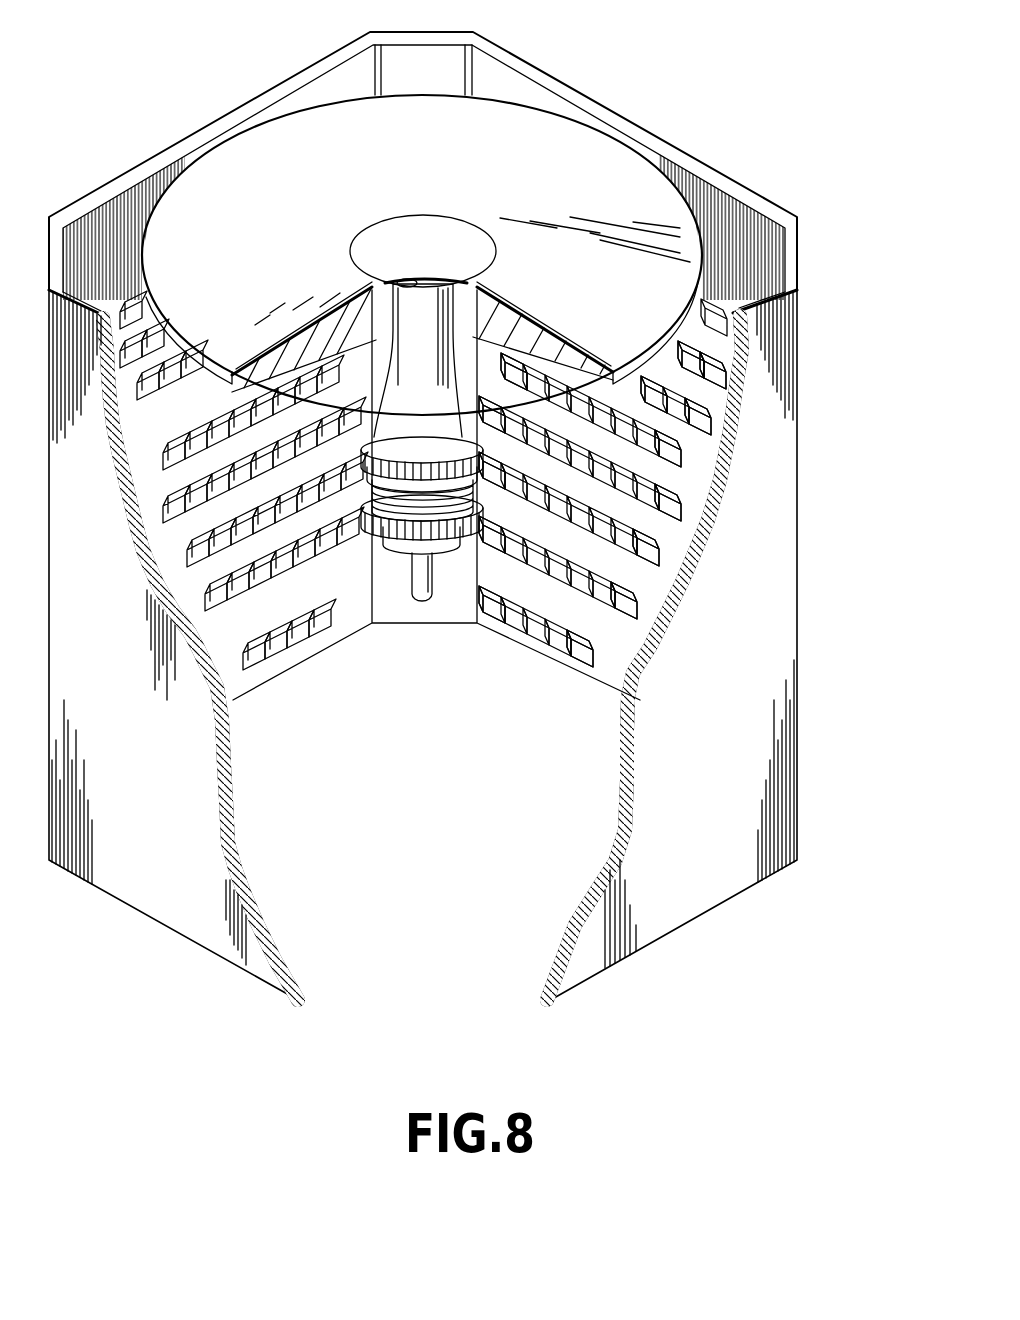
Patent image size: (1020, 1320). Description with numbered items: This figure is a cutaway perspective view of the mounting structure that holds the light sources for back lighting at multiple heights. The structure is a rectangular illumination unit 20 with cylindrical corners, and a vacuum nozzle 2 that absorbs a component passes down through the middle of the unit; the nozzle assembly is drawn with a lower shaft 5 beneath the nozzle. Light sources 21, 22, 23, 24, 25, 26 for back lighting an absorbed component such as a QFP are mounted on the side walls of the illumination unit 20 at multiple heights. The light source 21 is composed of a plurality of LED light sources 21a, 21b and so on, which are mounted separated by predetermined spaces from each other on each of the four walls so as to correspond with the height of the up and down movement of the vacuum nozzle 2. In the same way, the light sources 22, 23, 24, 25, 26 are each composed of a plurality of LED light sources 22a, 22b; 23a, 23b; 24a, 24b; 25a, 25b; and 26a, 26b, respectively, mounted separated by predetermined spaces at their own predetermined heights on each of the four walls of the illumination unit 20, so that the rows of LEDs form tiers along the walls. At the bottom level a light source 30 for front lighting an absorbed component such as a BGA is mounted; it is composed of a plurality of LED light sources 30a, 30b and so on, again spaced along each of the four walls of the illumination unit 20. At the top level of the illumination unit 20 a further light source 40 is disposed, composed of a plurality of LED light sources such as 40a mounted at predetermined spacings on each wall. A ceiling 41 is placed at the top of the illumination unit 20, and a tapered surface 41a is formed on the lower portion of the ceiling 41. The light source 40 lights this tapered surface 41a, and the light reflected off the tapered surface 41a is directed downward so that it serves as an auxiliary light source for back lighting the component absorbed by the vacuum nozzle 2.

The vacuum nozzle 2 is at (440, 307).
The drive shaft 5 is at (404, 560).
The illumination unit 20 is at (672, 142).
The light source 21 is at (640, 607).
The LED light source 21a is at (635, 623).
The LED light source 21b is at (628, 643).
The light source 22 is at (658, 562).
The LED light source 22a is at (652, 573).
The LED light source 22b is at (642, 585).
The light source 23 is at (682, 520).
The LED light source 23a is at (672, 540).
The LED light source 23b is at (664, 560).
The light source 24 is at (684, 464).
The LED light source 24a is at (688, 482).
The LED light source 24b is at (686, 503).
The light source 25 is at (707, 421).
The LED light source 25a is at (689, 448).
The LED light source 25b is at (672, 400).
The light source 26 is at (716, 377).
The LED light source 26a is at (723, 389).
The LED light source 26b is at (688, 363).
The light source 30 is at (640, 700).
The LED light source 30a is at (588, 660).
The LED light source 30b is at (567, 657).
The light source 40 is at (132, 328).
The LED light source 40a is at (716, 302).
The ceiling 41 is at (570, 140).
The tapered surface 41a is at (273, 372).